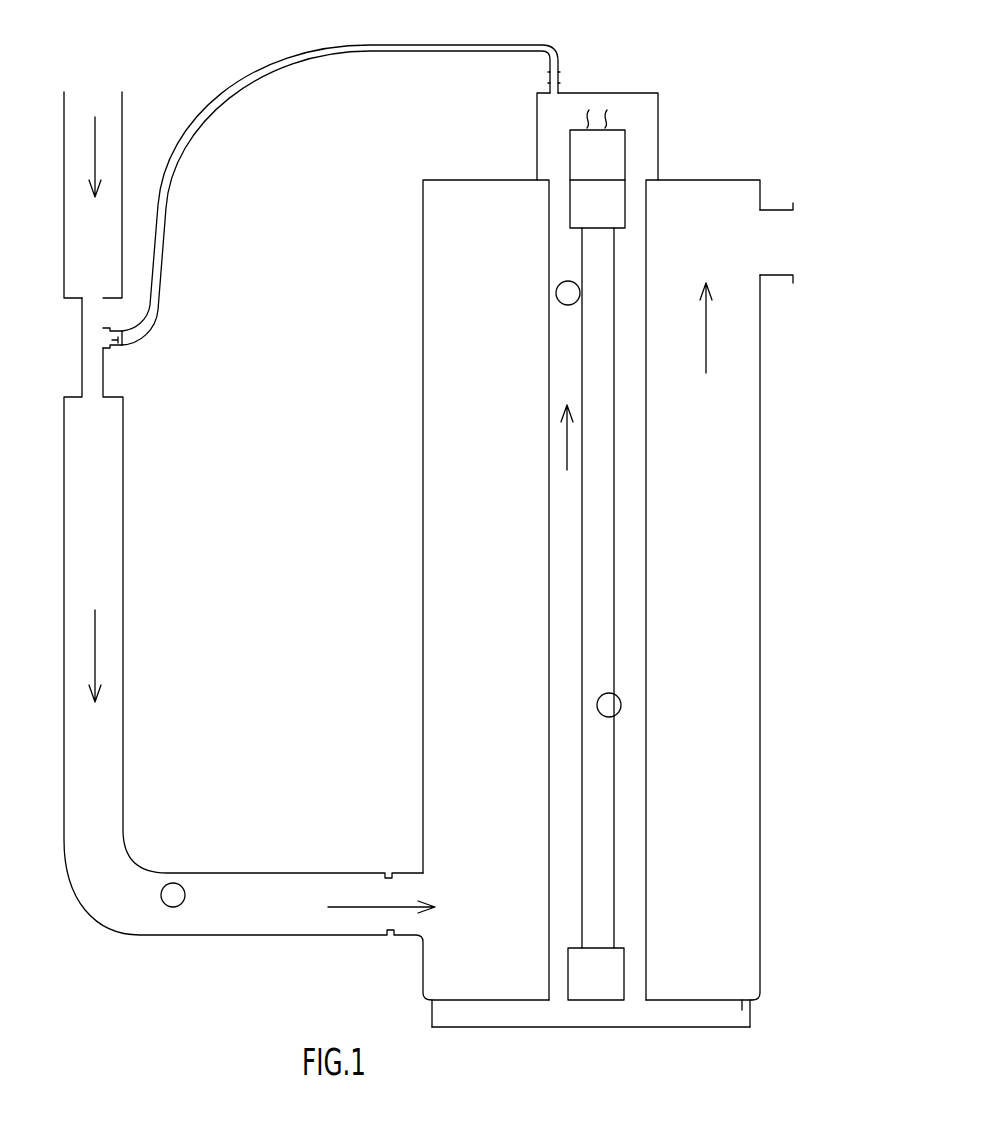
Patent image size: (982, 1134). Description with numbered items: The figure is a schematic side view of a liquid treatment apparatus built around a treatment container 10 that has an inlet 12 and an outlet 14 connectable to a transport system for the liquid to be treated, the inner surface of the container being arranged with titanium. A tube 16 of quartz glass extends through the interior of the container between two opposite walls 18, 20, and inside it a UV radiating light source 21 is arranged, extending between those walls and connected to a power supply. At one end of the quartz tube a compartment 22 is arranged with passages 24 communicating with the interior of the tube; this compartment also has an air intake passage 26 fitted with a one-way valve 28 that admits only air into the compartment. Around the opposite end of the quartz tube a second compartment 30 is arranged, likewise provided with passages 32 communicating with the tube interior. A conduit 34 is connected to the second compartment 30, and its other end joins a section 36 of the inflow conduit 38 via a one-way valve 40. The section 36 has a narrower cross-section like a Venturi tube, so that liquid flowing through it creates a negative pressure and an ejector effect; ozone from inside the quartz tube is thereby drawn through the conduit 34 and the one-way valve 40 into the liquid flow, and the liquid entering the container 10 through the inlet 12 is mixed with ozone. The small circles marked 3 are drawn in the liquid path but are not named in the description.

The gas bubbles 3 is at (396, 601).
The treatment container 10 is at (455, 637).
The inlet 12 is at (415, 938).
The outlet 14 is at (780, 209).
The tube 16 is at (650, 607).
The wall 18 is at (490, 1000).
The wall 20 is at (482, 180).
The UV radiating light source 21 is at (592, 770).
The compartment 22 is at (665, 1017).
The passages 24 is at (560, 987).
The air intake passage 26 is at (750, 1020).
The one-way valve 28 is at (754, 1009).
The second compartment 30 is at (636, 103).
The passages 32 is at (633, 186).
The conduit 34 is at (410, 44).
The section 36 is at (75, 353).
The inflow conduit 38 is at (100, 262).
The one-way valve 40 is at (112, 350).